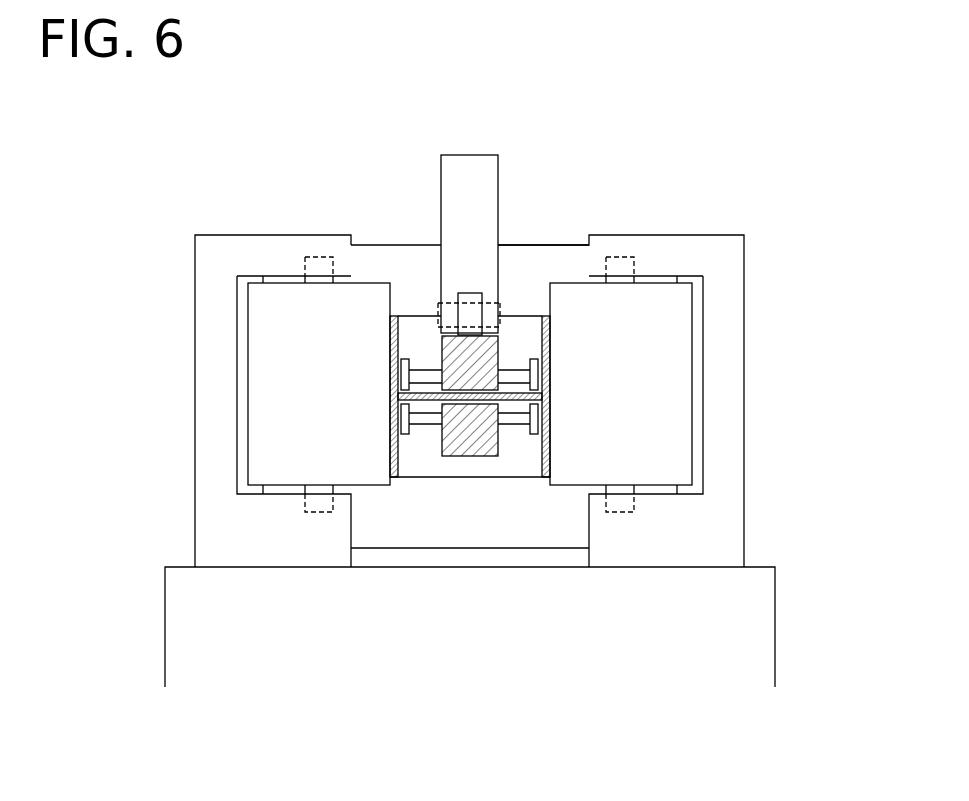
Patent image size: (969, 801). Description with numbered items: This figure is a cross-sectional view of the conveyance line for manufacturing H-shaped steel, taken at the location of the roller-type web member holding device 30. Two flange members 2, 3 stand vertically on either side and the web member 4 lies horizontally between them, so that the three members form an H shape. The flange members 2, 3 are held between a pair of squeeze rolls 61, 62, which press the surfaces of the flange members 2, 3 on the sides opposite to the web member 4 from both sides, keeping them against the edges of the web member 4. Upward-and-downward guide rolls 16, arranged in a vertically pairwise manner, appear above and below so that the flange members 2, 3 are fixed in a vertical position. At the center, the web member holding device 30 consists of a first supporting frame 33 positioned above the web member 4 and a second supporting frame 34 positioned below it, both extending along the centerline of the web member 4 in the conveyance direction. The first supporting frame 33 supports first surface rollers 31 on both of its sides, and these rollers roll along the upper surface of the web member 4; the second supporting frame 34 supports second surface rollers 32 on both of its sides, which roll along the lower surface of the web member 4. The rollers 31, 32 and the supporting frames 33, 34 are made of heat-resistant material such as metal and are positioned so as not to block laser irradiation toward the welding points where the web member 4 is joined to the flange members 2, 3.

The roller-type web member holding device 30 is at (563, 174).
The upward-and-downward guide rolls 16 is at (543, 245).
The squeeze roll 61 is at (248, 322).
The squeeze roll 62 is at (692, 318).
The flange member 2 is at (390, 396).
The flange member 3 is at (550, 391).
The first supporting frame 33 is at (438, 340).
The second supporting frame 34 is at (447, 457).
The web member 4 is at (467, 401).
The first surface rollers 31 is at (404, 359).
The second surface rollers 32 is at (406, 434).